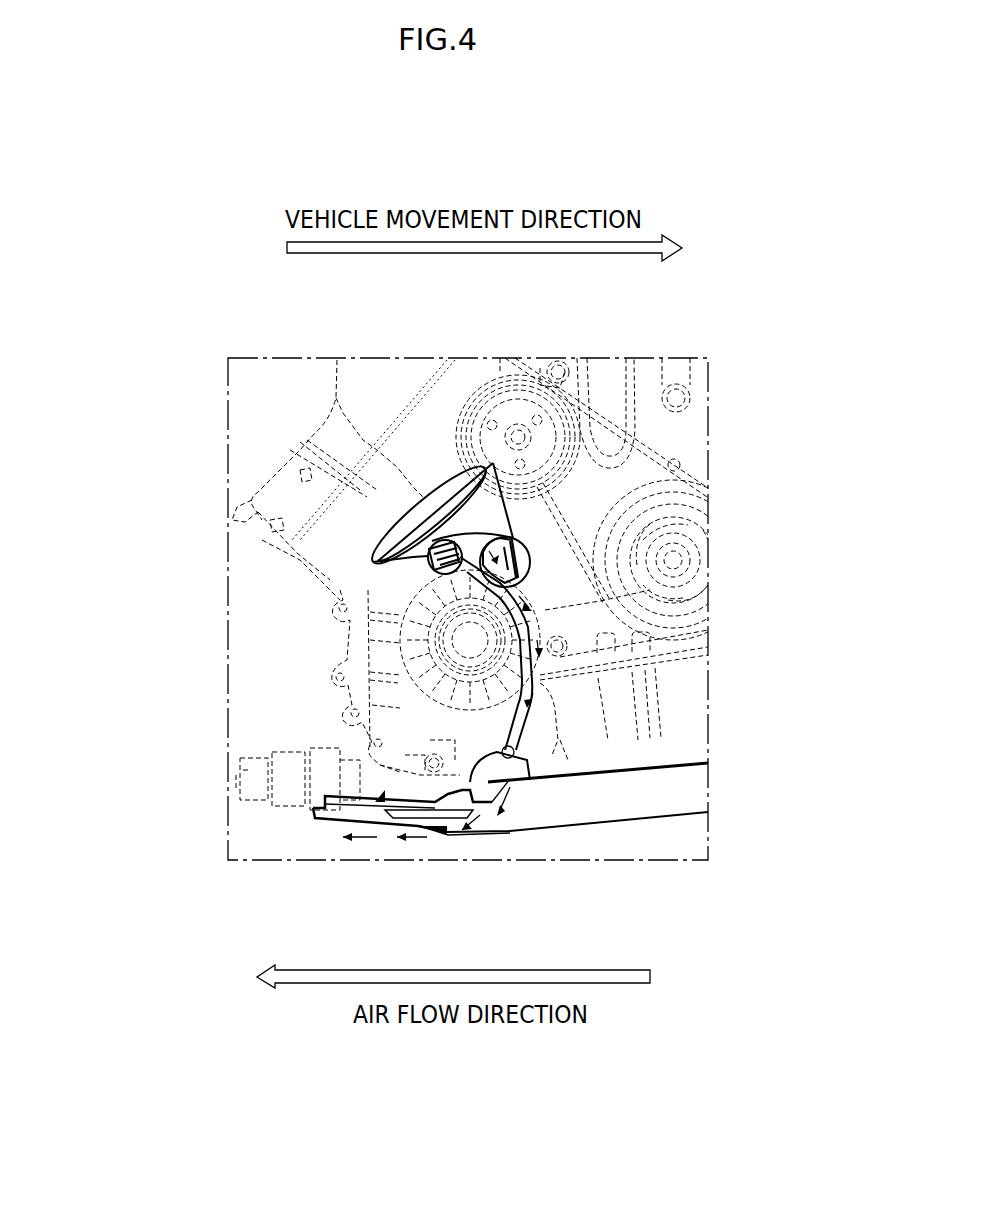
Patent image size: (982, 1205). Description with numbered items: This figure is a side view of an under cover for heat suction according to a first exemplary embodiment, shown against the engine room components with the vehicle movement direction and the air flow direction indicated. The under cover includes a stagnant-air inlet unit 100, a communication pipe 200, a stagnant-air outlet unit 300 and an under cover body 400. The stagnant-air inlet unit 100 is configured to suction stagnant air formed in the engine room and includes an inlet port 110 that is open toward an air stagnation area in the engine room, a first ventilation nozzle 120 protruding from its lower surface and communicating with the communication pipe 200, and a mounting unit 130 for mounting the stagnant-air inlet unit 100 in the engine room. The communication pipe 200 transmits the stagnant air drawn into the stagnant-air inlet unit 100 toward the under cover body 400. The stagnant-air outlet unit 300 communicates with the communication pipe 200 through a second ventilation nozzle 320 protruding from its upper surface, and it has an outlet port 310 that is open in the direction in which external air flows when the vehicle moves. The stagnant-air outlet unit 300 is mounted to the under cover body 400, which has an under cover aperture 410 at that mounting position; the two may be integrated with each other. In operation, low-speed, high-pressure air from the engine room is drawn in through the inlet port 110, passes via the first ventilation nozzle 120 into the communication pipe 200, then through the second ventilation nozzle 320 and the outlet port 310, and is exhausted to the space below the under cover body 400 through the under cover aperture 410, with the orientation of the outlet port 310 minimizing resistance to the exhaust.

The stagnant-air inlet unit 100 is at (110, 603).
The inlet port 110 is at (404, 517).
The first ventilation nozzle 120 is at (430, 560).
The mounting unit 130 is at (482, 574).
The communication pipe 200 is at (530, 635).
The stagnant-air outlet unit 300 is at (797, 860).
The outlet port 310 is at (470, 826).
The second ventilation nozzle 320 is at (545, 773).
The under cover body 400 is at (337, 818).
The under cover aperture 410 is at (425, 812).